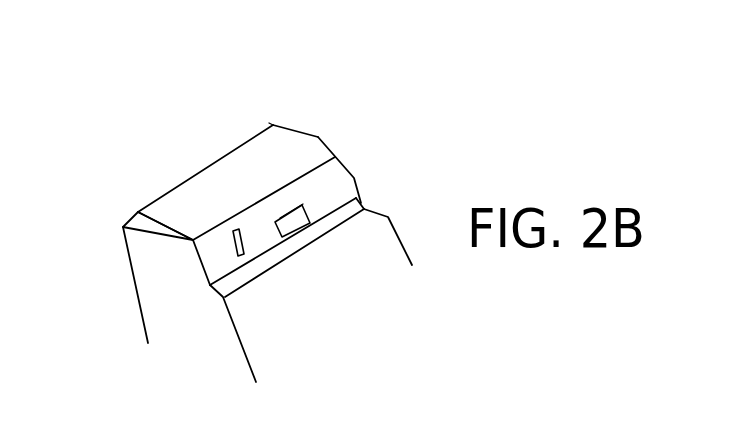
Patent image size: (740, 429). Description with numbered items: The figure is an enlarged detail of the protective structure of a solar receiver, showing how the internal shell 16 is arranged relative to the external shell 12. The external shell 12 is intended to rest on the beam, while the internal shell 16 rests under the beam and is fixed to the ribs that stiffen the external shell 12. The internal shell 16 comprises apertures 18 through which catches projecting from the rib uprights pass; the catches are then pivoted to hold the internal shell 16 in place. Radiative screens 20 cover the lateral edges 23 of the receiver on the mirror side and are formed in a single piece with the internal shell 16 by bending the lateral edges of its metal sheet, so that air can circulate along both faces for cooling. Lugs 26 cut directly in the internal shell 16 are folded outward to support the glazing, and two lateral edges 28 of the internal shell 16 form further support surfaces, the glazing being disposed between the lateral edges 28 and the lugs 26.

The external shell 12 is at (138, 298).
The internal shell 16 is at (355, 177).
The apertures 18 is at (242, 250).
The radiative screens 20 is at (242, 172).
The lateral edges 23 is at (137, 222).
The lugs 26 is at (290, 228).
The lateral edges 28 is at (353, 212).